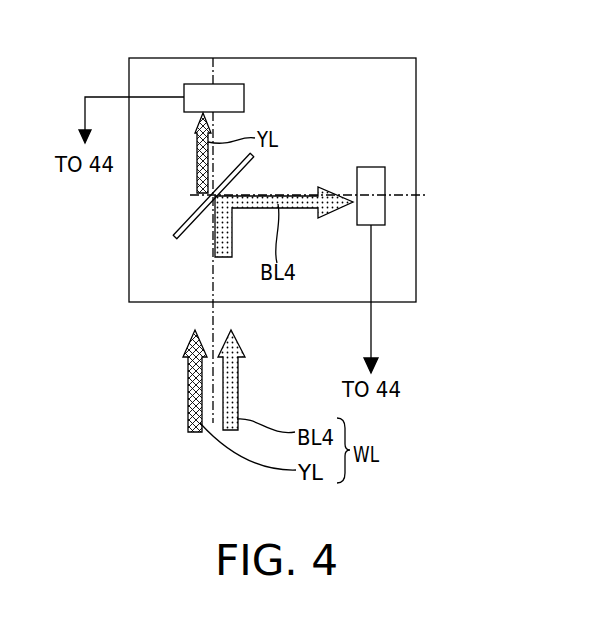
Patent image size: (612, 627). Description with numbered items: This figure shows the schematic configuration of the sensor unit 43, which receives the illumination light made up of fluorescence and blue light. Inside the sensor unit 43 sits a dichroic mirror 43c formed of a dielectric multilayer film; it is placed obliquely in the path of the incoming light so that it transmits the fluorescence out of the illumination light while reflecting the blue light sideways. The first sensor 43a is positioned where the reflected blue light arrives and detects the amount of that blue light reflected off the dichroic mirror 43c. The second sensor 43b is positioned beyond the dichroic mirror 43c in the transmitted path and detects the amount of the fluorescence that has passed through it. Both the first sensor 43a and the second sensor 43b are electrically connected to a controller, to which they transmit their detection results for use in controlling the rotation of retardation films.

The sensor unit 43 is at (416, 83).
The first sensor 43a is at (373, 217).
The second sensor 43b is at (228, 96).
The dichroic mirror 43c is at (183, 227).